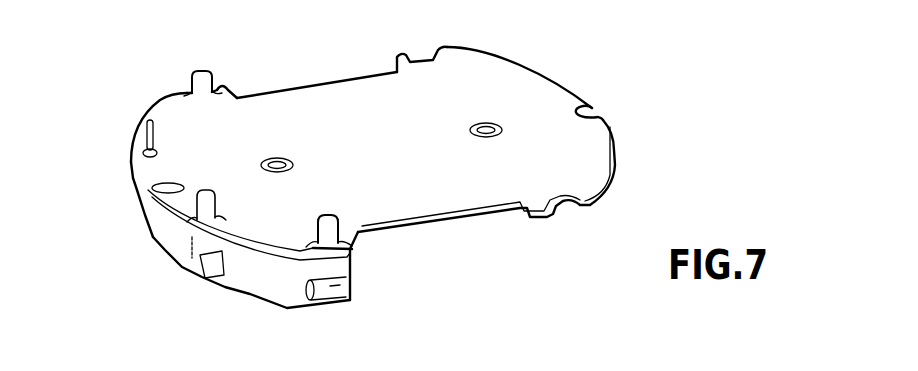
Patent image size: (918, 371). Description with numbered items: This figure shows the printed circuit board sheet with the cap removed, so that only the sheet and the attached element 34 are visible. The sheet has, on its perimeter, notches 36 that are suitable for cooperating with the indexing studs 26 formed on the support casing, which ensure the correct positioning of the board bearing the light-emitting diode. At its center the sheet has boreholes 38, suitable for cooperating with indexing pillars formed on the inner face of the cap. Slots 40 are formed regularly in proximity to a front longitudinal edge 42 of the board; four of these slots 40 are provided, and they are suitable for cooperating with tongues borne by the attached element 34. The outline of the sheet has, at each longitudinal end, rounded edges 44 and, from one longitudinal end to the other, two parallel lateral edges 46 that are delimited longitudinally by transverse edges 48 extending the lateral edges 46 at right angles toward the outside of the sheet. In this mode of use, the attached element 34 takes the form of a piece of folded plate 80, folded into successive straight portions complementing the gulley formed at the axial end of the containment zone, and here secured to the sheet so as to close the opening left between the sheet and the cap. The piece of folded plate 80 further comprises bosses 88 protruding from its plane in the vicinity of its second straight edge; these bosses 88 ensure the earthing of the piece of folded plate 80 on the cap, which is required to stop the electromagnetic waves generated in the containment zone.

The indexing studs 26 is at (333, 215).
The attached element 34 is at (222, 293).
The notches 36 is at (433, 56).
The boreholes 38 is at (287, 160).
The slots 40 is at (184, 91).
The front longitudinal edge 42 is at (130, 158).
The rounded edges 44 is at (563, 84).
The lateral edges 46 is at (452, 219).
The transverse edges 48 is at (238, 93).
The piece of folded plate 80 is at (167, 238).
The bosses 88 is at (355, 297).